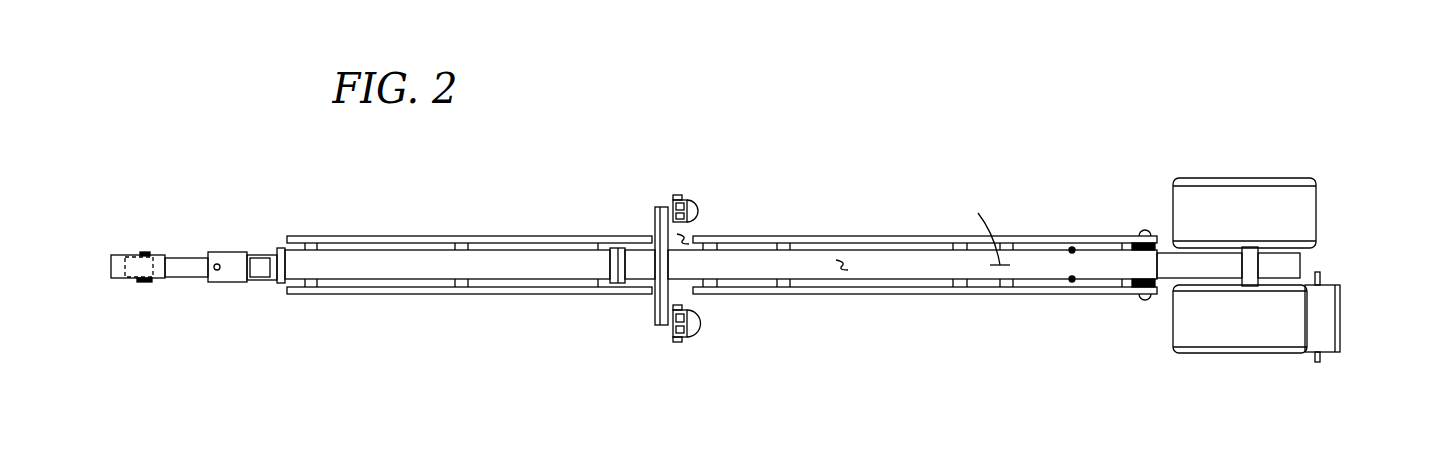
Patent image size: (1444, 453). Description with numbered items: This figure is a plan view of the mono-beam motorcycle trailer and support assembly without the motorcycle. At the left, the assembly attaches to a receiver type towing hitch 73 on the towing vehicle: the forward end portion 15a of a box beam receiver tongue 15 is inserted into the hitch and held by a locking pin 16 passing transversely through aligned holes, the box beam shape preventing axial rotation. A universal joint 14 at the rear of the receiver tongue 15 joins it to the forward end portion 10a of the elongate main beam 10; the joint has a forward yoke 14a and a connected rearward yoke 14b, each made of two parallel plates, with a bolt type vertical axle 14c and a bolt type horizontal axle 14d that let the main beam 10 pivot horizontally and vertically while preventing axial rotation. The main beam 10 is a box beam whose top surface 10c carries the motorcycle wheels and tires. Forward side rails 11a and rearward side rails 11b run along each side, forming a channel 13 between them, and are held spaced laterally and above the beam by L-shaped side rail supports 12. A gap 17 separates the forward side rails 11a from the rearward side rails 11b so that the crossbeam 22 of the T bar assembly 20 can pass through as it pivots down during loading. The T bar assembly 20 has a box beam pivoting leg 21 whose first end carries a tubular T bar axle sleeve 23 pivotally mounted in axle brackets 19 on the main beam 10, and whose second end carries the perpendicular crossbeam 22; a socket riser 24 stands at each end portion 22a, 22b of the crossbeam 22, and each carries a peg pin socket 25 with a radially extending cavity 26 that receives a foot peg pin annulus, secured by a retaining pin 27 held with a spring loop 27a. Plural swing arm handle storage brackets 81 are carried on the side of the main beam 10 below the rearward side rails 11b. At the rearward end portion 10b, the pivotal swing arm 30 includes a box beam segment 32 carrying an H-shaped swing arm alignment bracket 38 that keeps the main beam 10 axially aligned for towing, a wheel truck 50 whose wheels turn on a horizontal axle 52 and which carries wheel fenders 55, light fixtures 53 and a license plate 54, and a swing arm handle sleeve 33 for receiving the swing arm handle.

The main beam 10 is at (721, 264).
The forward end portion of the main beam 10a is at (290, 268).
The rearward end portion of the main beam 10b is at (1137, 257).
The top surface of the main beam 10c is at (978, 227).
The forward side rails 11a is at (415, 238).
The rearward side rails 11b is at (1078, 242).
The side rail supports 12 is at (312, 250).
The channel 13 is at (845, 258).
The universal joint 14 is at (263, 268).
The forward yoke 14a is at (225, 260).
The rearward yoke 14b is at (257, 253).
The vertical axle 14c is at (218, 272).
The horizontal axle 14d is at (263, 283).
The receiver tongue 15 is at (187, 263).
The forward end portion of the receiver tongue 15a is at (127, 257).
The locking pin 16 is at (147, 282).
The gap 17 is at (690, 235).
The axle brackets 19 is at (591, 265).
The T bar assembly 20 is at (684, 263).
The pivoting leg 21 is at (643, 265).
The crossbeam 22 is at (670, 277).
The end portion of the crossbeam 22a is at (655, 318).
The end portion of the crossbeam 22b is at (660, 207).
The T bar axle sleeve 23 is at (620, 287).
The socket riser 24 is at (676, 198).
The peg pin socket 25 is at (700, 207).
The radially extending cavity 26 is at (690, 312).
The retaining pin 27 is at (682, 205).
The spring loop 27a is at (700, 213).
The swing arm 30 is at (1223, 277).
The box beam segment 32 is at (1187, 262).
The swing arm handle sleeve 33 is at (1290, 263).
The swing arm alignment bracket 38 is at (1140, 292).
The wheel truck 50 is at (1275, 284).
The horizontal axle 52 is at (1248, 260).
The light fixtures 53 is at (1330, 300).
The license plate 54 is at (1320, 358).
The wheel fenders 55 is at (1305, 205).
The receiver type towing hitch 73 is at (117, 275).
The swing arm handle storage brackets 81 is at (793, 282).